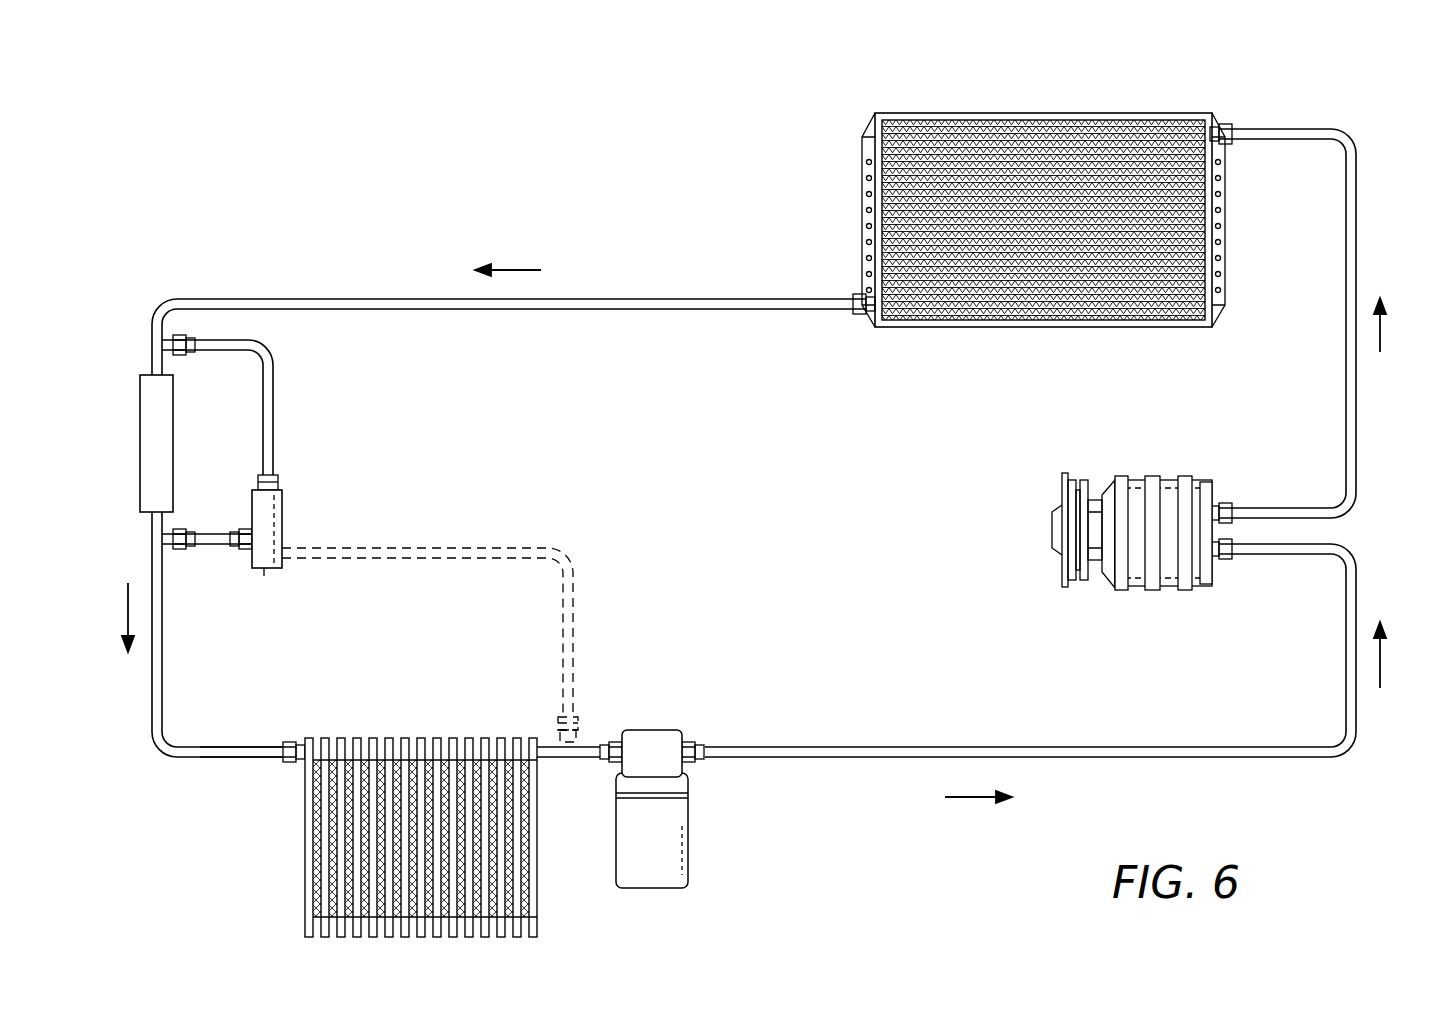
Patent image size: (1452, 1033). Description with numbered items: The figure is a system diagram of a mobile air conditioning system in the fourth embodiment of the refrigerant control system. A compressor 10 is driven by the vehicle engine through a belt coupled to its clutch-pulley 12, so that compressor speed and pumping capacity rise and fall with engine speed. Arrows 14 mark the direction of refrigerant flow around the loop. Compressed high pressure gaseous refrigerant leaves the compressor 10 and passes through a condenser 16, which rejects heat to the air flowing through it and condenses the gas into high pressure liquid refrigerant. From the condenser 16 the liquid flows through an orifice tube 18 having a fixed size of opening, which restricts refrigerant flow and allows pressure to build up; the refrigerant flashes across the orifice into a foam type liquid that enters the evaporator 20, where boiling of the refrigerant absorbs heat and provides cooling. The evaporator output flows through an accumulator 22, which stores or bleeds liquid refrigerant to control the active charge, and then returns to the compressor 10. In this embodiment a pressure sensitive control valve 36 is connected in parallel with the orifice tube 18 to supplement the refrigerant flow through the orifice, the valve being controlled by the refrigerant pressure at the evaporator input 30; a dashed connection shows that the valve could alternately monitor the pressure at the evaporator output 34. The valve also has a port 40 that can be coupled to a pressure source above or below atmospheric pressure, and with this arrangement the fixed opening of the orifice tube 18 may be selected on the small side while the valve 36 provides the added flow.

The compressor 10 is at (1136, 586).
The clutch-pulley 12 is at (1062, 586).
The arrows 14 is at (516, 270).
The condenser 16 is at (1020, 113).
The orifice tube 18 is at (140, 455).
The evaporator 20 is at (403, 738).
The accumulator 22 is at (650, 730).
The input of the evaporator 30 is at (238, 747).
The output of the evaporator 34 is at (578, 720).
The pressure sensitive control valve 36 is at (282, 506).
The port 40 is at (268, 568).